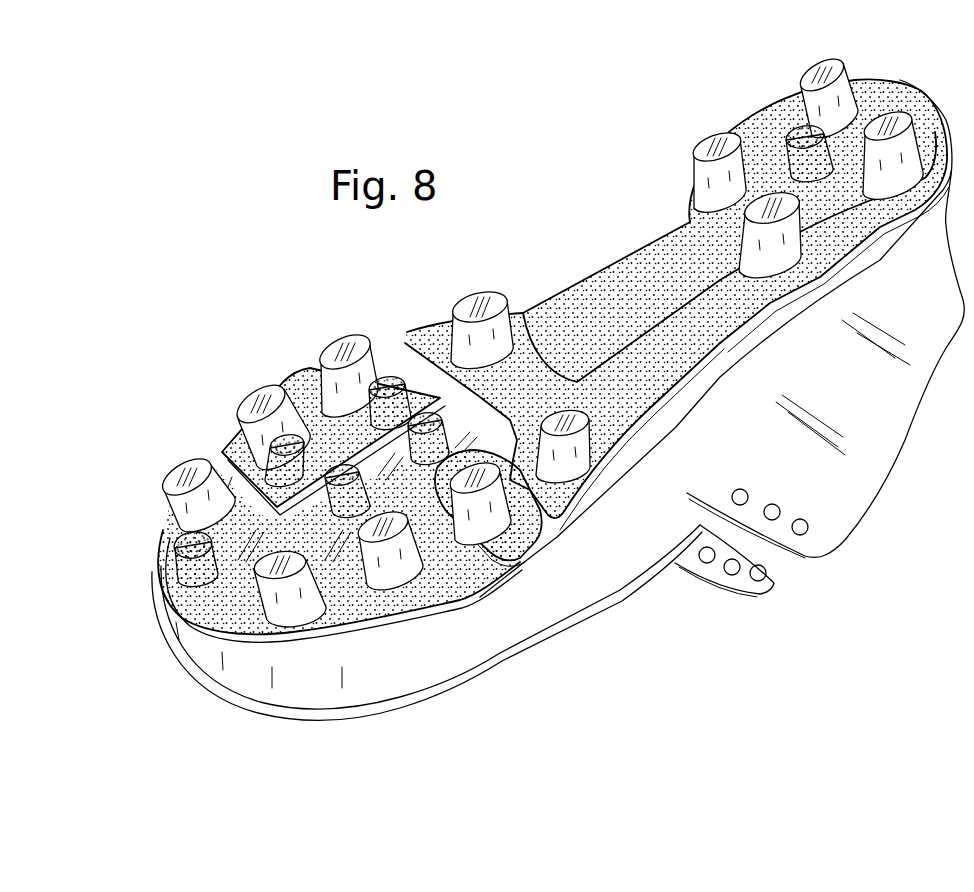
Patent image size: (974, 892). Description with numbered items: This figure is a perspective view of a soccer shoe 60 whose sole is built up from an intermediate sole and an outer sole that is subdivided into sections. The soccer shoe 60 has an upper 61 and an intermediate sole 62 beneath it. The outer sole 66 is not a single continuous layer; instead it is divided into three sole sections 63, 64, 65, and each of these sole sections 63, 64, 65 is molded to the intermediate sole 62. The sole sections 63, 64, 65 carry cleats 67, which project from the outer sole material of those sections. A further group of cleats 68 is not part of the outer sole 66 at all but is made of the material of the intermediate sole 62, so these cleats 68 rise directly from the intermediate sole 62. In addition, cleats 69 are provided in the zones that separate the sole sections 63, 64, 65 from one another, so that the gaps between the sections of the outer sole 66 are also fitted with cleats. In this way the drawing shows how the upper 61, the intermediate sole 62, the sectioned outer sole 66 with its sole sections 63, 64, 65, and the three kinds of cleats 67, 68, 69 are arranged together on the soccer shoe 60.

The soccer shoe 60 is at (560, 278).
The upper 61 is at (602, 575).
The intermediate sole 62 is at (548, 540).
The sole section 63 is at (335, 625).
The sole section 64 is at (310, 368).
The sole section 65 is at (640, 397).
The outer sole 66 is at (656, 254).
The cleats 67 is at (195, 565).
The cleats 68 is at (255, 402).
The cleats 69 is at (432, 455).